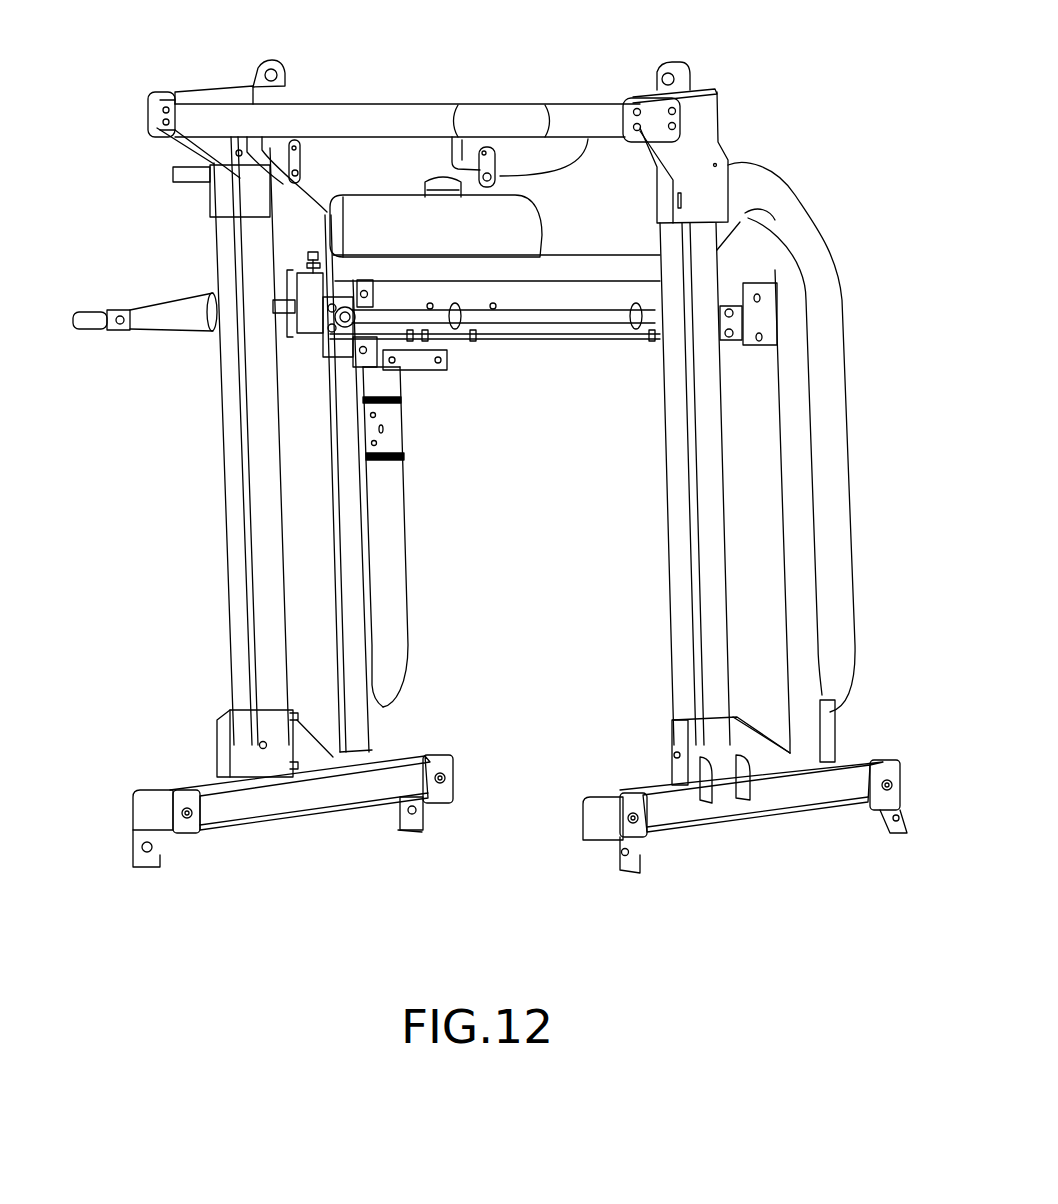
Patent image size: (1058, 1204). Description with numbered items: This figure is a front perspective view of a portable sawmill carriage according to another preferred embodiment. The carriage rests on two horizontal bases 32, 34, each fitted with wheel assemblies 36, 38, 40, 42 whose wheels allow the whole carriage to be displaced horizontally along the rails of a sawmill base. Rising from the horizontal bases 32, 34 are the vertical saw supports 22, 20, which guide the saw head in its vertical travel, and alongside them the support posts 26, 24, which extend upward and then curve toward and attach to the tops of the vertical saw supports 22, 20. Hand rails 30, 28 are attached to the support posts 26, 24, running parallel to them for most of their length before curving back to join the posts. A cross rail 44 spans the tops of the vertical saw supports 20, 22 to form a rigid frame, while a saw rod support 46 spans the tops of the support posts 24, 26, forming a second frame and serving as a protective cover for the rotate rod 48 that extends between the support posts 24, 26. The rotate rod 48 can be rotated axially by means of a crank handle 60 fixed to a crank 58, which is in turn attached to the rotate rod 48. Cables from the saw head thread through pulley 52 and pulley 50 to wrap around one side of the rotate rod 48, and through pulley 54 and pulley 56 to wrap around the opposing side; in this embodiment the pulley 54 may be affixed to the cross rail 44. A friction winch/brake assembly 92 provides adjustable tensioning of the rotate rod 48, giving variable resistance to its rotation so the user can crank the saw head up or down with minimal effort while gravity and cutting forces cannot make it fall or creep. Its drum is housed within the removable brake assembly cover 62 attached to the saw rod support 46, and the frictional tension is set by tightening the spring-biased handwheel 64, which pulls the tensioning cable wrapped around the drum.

The vertical saw support 20 is at (263, 522).
The vertical saw support 22 is at (702, 486).
The support post 24 is at (353, 632).
The support post 26 is at (797, 556).
The hand rail 28 is at (398, 605).
The hand rail 30 is at (842, 491).
The horizontal base 32 is at (677, 810).
The horizontal base 34 is at (223, 813).
The wheel assembly 36 is at (633, 840).
The wheel assembly 38 is at (880, 810).
The wheel assembly 40 is at (178, 828).
The wheel assembly 42 is at (440, 797).
The cross rail 44 is at (470, 115).
The saw rod support 46 is at (615, 270).
The rotate rod 48 is at (527, 316).
The pulley 50 is at (298, 176).
The pulley 52 is at (200, 184).
The pulley 54 is at (467, 167).
The pulley 56 is at (492, 177).
The crank 58 is at (155, 320).
The crank handle 60 is at (86, 331).
The brake assembly cover 62 is at (313, 313).
The handwheel 64 is at (307, 259).
The friction winch/brake assembly 92 is at (283, 303).